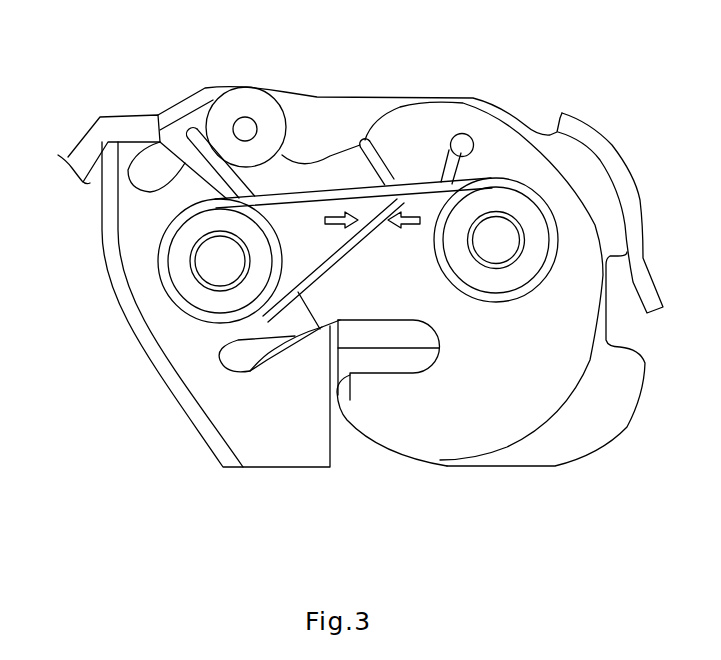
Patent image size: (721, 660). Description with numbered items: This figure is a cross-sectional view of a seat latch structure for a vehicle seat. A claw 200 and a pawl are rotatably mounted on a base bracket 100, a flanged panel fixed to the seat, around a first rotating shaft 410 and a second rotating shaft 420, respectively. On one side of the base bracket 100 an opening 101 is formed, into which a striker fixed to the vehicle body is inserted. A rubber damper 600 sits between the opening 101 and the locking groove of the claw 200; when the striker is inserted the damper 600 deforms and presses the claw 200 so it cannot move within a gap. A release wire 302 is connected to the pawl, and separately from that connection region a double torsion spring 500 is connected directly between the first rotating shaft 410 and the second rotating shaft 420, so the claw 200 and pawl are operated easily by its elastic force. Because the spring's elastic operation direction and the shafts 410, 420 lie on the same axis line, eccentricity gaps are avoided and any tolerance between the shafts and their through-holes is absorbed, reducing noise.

The base bracket 100 is at (148, 362).
The opening 101 is at (375, 360).
The claw 200 is at (520, 423).
The release wire 302 is at (246, 124).
The first rotating shaft 410 is at (495, 230).
The second rotating shaft 420 is at (207, 257).
The double torsion spring 500 is at (348, 193).
The damper 600 is at (418, 333).